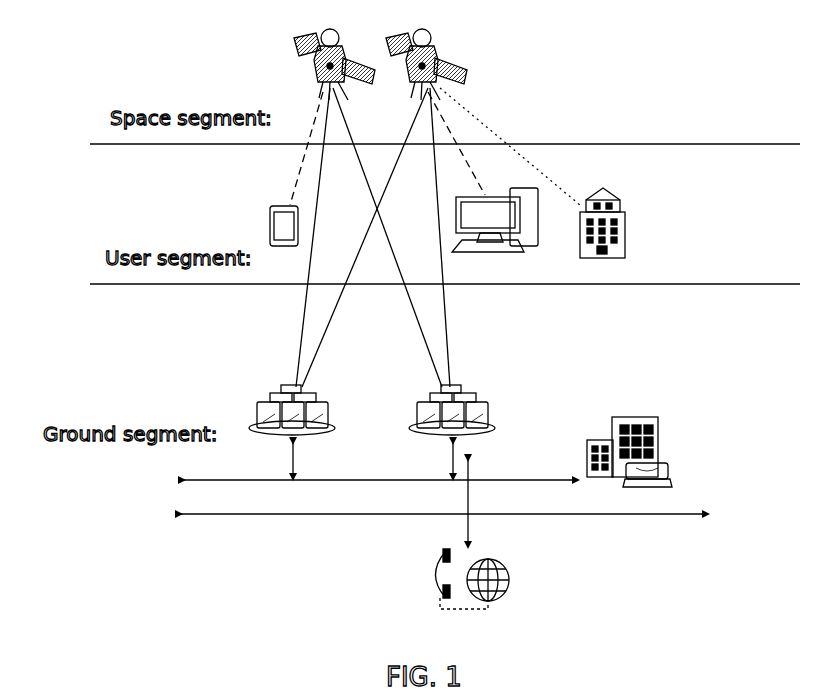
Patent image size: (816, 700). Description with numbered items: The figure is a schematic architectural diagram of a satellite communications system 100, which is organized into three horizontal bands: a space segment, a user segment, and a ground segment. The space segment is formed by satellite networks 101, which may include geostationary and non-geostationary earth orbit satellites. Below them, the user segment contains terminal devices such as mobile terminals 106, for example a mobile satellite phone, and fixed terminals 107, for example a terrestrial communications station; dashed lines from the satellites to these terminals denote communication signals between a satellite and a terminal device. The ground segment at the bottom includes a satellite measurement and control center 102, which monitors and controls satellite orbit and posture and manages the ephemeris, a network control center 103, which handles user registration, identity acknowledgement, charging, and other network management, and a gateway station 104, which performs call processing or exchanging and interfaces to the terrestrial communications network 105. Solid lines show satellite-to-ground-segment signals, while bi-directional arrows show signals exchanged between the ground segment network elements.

The satellite communications system 100 is at (150, 50).
The satellite networks 101 is at (470, 74).
The satellite measurement and control center 102 is at (273, 388).
The network control center 103 is at (665, 423).
The gateway station 104 is at (425, 385).
The terrestrial communications network 105 is at (512, 580).
The mobile terminal 106 is at (268, 218).
The fixed terminal 107 is at (630, 212).